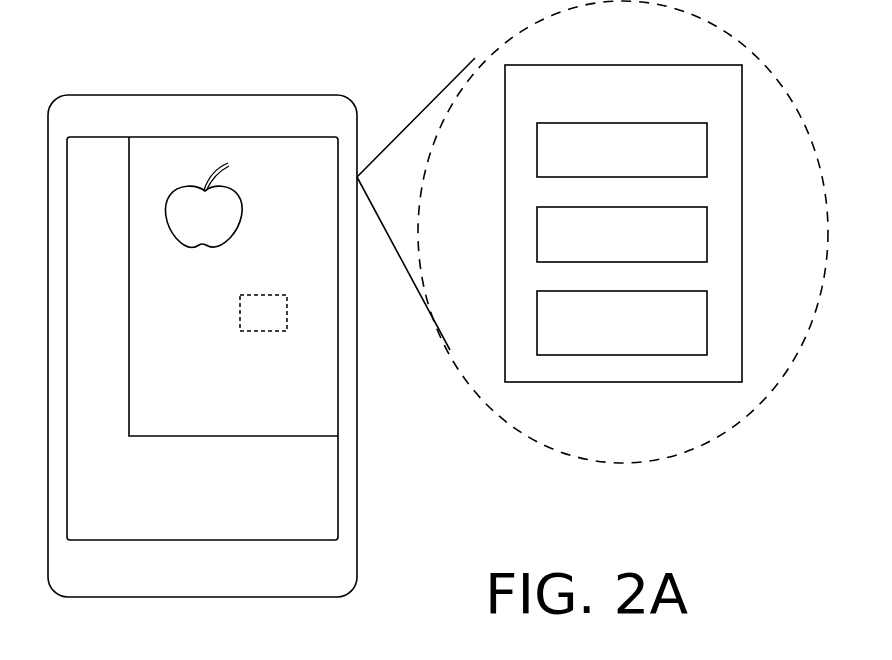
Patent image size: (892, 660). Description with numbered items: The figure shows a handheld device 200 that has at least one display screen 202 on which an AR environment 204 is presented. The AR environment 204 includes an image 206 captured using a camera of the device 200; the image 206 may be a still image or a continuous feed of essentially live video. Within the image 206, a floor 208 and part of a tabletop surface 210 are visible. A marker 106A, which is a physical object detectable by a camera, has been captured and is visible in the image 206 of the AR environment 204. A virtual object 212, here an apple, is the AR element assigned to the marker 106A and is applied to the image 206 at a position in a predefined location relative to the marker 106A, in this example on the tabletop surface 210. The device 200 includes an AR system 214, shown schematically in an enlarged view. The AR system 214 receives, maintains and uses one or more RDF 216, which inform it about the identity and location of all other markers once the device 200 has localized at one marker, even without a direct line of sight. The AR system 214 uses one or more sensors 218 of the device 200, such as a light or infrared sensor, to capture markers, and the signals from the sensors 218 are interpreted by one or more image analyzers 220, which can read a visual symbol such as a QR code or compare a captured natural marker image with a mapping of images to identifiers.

The device 200 is at (104, 609).
The display screen 202 is at (176, 541).
The AR environment 204 is at (162, 455).
The image 206 is at (233, 469).
The floor 208 is at (107, 300).
The tabletop surface 210 is at (233, 286).
The virtual object 212 is at (181, 254).
The marker 106A is at (262, 292).
The AR system 214 is at (606, 62).
The RDF 216 is at (707, 229).
The sensor 218 is at (707, 148).
The image analyzer 220 is at (707, 318).